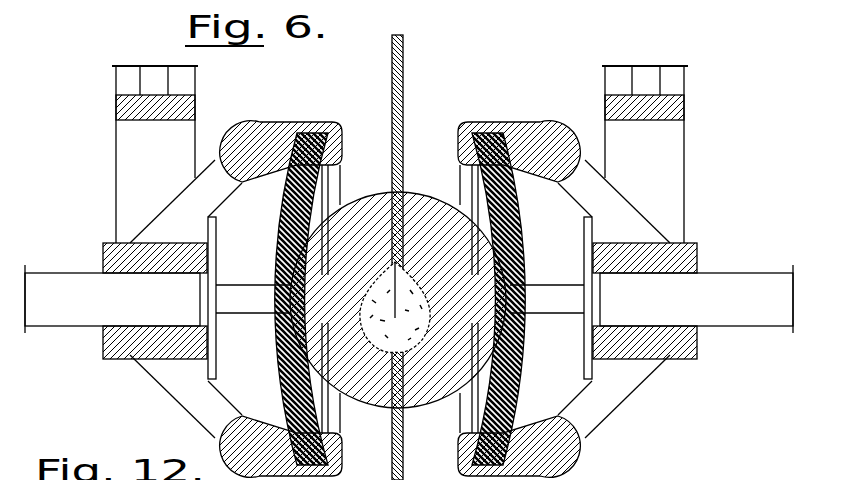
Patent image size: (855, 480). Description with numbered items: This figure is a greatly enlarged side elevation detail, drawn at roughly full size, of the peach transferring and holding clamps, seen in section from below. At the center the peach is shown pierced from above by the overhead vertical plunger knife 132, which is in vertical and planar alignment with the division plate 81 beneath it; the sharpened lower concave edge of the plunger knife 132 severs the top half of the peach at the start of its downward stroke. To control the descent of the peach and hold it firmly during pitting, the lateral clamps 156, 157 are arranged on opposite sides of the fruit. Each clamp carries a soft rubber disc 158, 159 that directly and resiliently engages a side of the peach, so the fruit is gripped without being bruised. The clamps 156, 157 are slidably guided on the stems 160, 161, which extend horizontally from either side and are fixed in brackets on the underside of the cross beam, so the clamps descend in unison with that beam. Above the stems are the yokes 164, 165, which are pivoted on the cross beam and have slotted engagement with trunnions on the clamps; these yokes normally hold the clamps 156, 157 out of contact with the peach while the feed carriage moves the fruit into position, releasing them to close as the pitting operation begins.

The division plate 81 is at (401, 458).
The overhead vertical plunger knife 132 is at (404, 100).
The lateral clamp 156 is at (246, 130).
The lateral clamp 157 is at (559, 126).
The soft rubber disc 158 is at (285, 233).
The soft rubber disc 159 is at (523, 253).
The stem 160 is at (75, 285).
The stem 161 is at (733, 283).
The yoke 164 is at (127, 83).
The yoke 165 is at (678, 80).